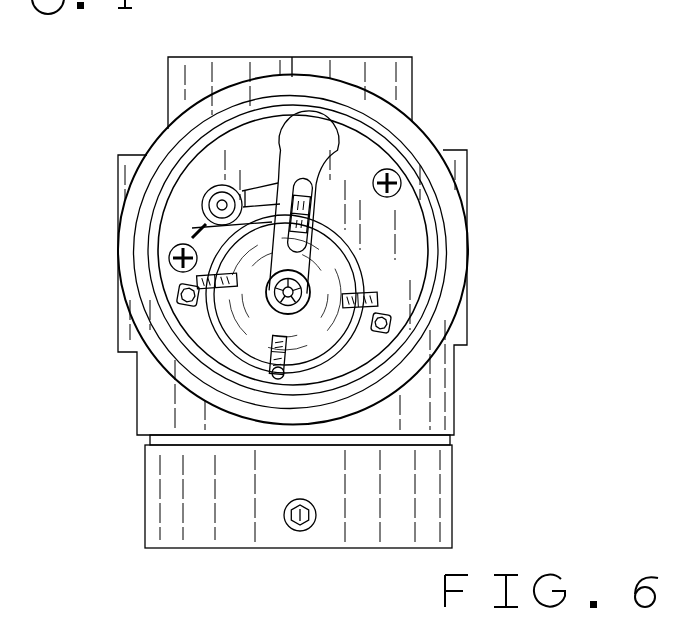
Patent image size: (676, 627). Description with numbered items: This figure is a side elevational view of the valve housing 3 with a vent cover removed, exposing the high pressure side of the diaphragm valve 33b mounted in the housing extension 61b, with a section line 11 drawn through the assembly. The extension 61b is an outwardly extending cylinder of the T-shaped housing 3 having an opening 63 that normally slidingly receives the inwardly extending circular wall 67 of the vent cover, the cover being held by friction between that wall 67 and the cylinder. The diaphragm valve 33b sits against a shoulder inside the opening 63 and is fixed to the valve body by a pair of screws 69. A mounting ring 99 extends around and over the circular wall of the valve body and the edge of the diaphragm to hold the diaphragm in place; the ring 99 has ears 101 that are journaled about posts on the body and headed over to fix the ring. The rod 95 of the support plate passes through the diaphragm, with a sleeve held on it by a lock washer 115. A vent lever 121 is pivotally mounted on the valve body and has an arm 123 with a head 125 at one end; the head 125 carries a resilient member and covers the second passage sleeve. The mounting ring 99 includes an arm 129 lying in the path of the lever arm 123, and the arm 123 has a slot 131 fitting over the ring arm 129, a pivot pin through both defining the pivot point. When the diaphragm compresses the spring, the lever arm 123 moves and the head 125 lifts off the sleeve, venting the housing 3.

The valve housing 3 is at (505, 310).
The section line 11 is at (315, 215).
The diaphragm valve 33b is at (420, 259).
The extension 61b is at (428, 132).
The opening 63 is at (423, 168).
The circular wall 67 is at (357, 160).
The screws 69 is at (172, 251).
The rod 95 is at (272, 312).
The mounting ring 99 is at (185, 305).
The ears 101 is at (205, 282).
The lock washer 115 is at (272, 376).
The vent lever 121 is at (343, 204).
The arm 123 is at (287, 190).
The head 125 is at (281, 126).
The arm 129 is at (196, 231).
The slot 131 is at (212, 188).